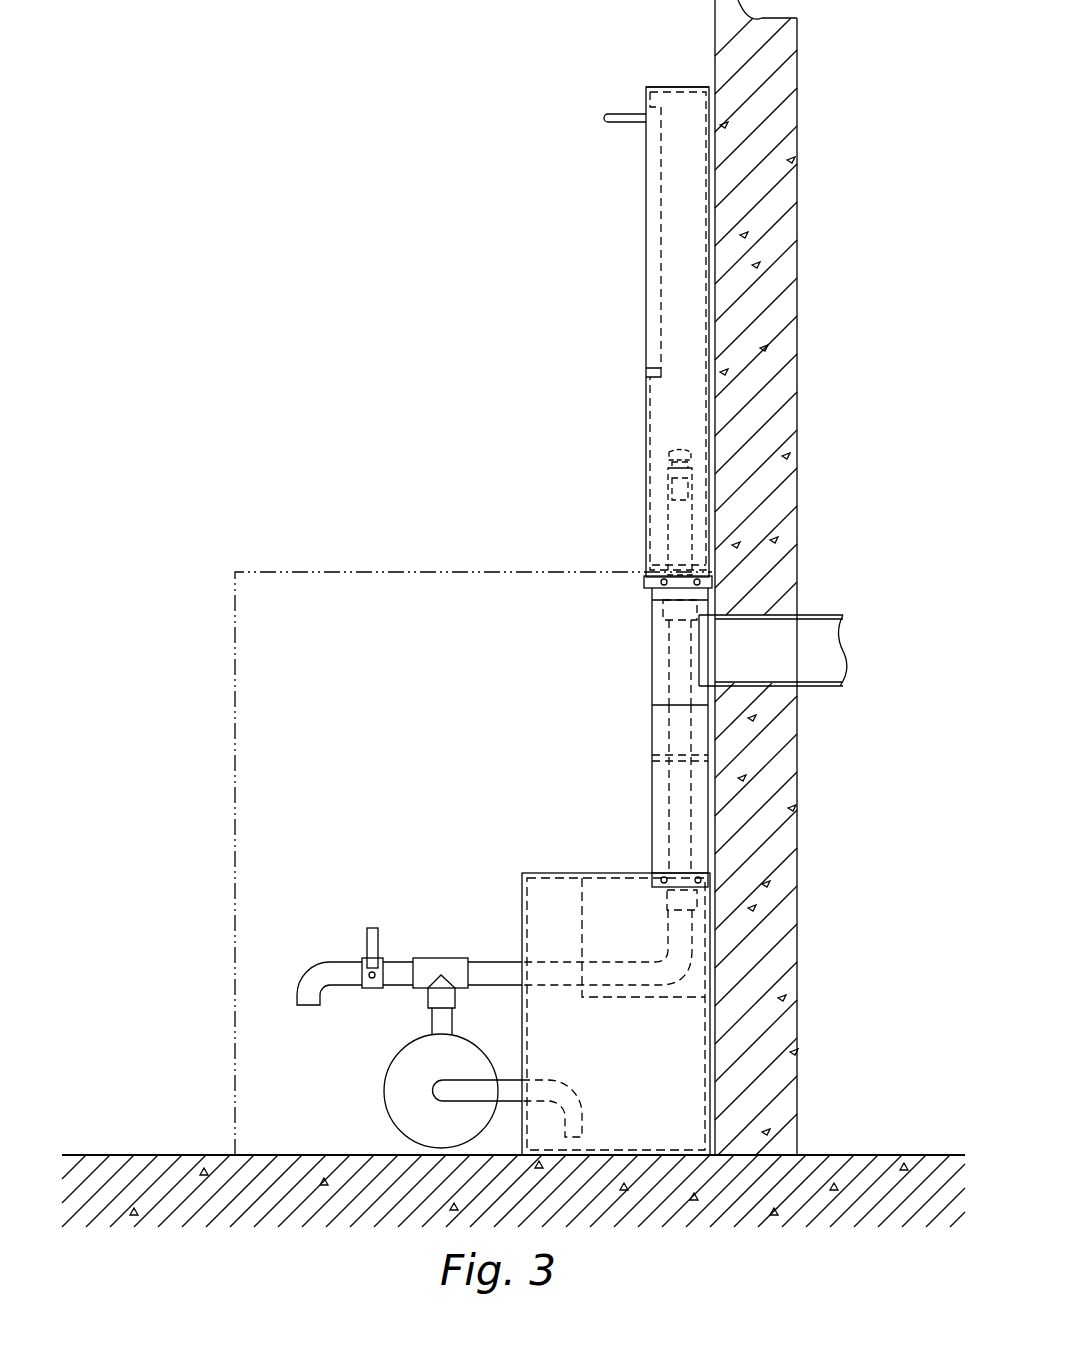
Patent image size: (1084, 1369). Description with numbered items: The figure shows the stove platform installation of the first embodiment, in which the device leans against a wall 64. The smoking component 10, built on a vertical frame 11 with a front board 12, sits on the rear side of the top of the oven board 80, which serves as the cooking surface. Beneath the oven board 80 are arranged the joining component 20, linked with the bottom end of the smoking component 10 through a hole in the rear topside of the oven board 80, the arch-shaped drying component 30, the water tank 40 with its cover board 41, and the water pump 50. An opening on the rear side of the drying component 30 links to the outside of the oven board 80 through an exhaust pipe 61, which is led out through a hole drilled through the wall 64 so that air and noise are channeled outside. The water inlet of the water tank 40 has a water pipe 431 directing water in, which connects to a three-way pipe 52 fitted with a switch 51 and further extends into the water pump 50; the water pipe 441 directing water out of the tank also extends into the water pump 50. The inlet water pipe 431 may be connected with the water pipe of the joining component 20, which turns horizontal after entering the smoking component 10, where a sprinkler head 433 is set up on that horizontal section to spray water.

The smoking component 10 is at (632, 270).
The vertical frame 11 is at (678, 88).
The front board 12 is at (648, 472).
The sprinkler head 433 is at (683, 450).
The wall 64 is at (773, 368).
The exhaust pipe 61 is at (820, 633).
The oven board 80 is at (365, 572).
The drying component 30 is at (640, 656).
The joining component 20 is at (638, 785).
The water tank 40 is at (526, 858).
The cover board 41 is at (567, 873).
The water pipe directing water in 431 is at (493, 972).
The water pipe directing water out 441 is at (466, 1090).
The water pump 50 is at (362, 1098).
The switch 51 is at (373, 940).
The three-way pipe 52 is at (441, 962).